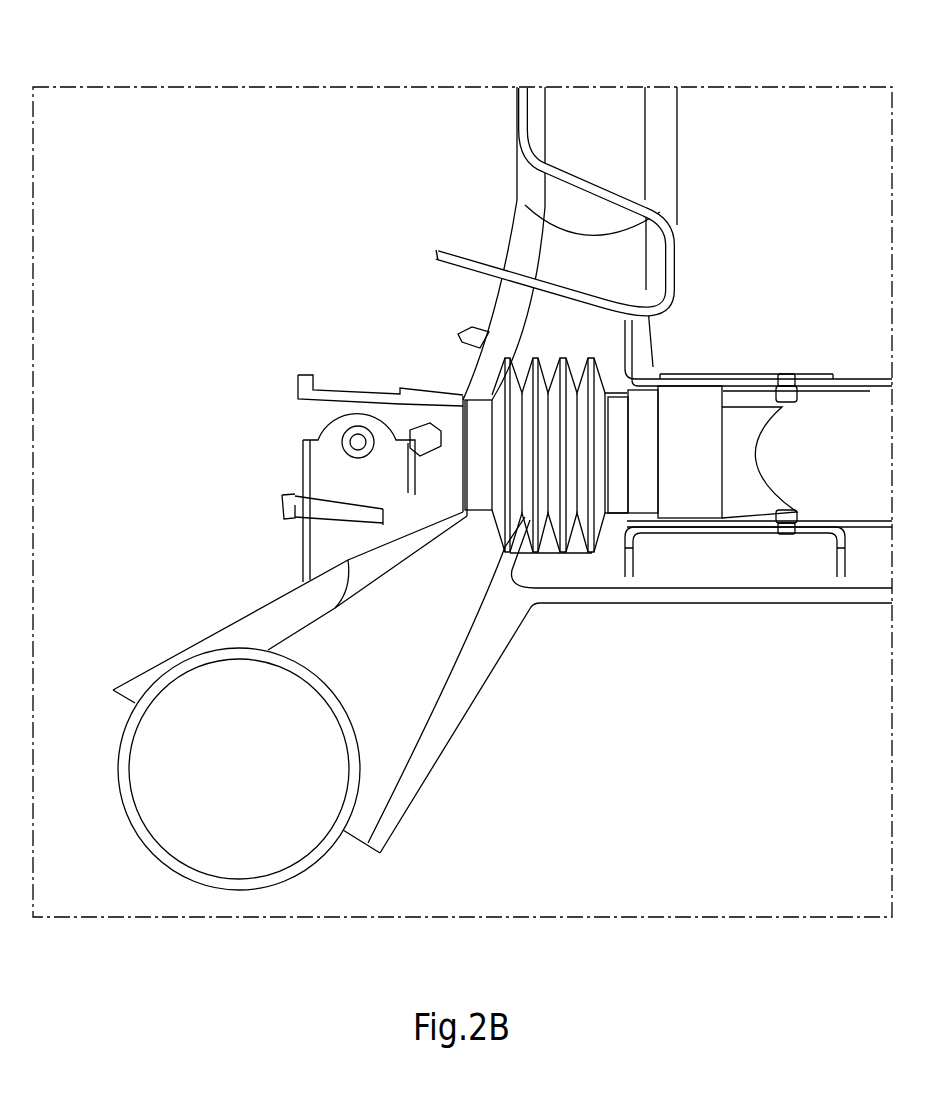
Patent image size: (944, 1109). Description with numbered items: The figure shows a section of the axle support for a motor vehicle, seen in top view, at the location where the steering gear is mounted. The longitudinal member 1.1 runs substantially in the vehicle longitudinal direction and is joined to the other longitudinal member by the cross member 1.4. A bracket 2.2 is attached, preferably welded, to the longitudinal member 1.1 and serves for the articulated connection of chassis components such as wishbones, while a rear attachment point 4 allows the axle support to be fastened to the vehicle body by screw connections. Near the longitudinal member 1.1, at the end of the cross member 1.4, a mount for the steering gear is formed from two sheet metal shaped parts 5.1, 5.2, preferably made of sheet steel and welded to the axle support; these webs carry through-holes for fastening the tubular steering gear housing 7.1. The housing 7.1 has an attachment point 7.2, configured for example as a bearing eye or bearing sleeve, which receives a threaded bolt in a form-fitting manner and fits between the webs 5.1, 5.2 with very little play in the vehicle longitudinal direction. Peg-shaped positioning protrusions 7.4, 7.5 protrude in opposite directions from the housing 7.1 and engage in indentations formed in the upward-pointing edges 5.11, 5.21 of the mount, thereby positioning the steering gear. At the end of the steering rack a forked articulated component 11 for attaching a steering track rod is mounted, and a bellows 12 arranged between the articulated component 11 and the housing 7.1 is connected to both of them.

The longitudinal member 1.1 is at (600, 108).
The bracket 2.2 is at (483, 262).
The rear attachment point 4 is at (135, 825).
The sheet metal shaped part 5.1 is at (710, 528).
The upward-pointing edge 5.11 is at (800, 534).
The sheet metal shaped part 5.2 is at (680, 380).
The upward-pointing edge 5.21 is at (792, 374).
The steering gear housing 7.1 is at (873, 403).
The attachment point 7.2 is at (700, 393).
The positioning protrusion 7.4 is at (787, 535).
The positioning protrusion 7.5 is at (788, 372).
The articulated component 11 is at (358, 408).
The bellows 12 is at (528, 408).
The cross member 1.4 is at (660, 570).